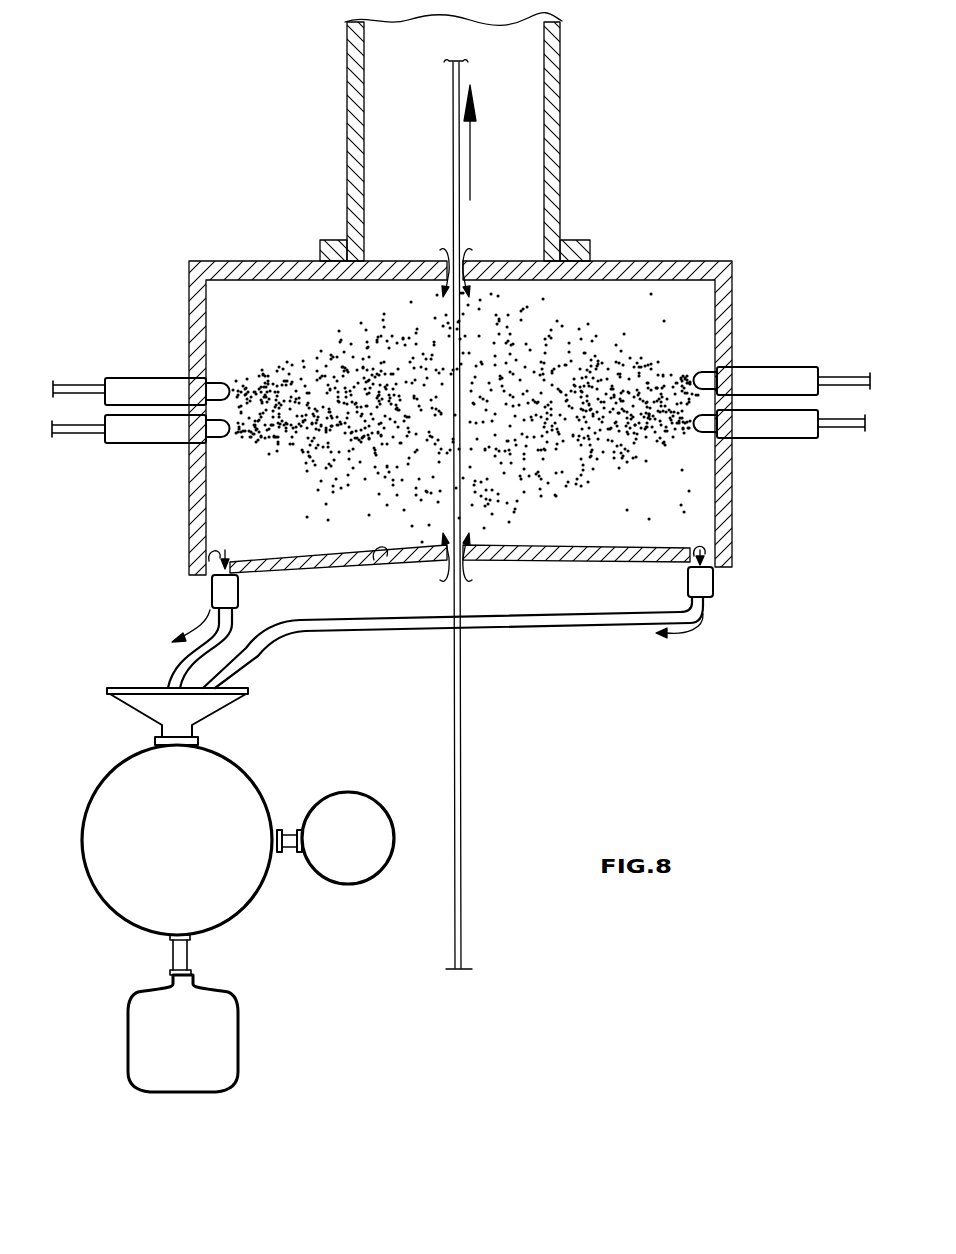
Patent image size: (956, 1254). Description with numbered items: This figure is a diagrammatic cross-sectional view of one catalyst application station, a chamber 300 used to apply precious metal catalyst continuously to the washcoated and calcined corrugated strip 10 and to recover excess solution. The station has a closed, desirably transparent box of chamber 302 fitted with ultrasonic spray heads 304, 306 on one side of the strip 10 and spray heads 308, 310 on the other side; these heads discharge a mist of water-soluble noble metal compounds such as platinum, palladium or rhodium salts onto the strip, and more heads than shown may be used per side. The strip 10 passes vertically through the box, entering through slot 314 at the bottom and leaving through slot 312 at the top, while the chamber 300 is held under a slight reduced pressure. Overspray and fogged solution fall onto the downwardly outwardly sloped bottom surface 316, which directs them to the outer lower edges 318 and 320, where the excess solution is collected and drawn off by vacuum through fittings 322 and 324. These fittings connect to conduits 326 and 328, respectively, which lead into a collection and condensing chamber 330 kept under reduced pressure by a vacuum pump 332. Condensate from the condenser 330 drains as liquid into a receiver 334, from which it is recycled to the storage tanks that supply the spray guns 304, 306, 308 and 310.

The corrugated strip 10 is at (456, 218).
The chamber 300 is at (650, 240).
The closed box of chamber 302 is at (725, 305).
The ultrasonic spray head 304 is at (143, 392).
The ultrasonic spray head 306 is at (137, 432).
The ultrasonic spray head 308 is at (758, 380).
The ultrasonic spray head 310 is at (775, 428).
The slot 312 is at (464, 258).
The slot 314 is at (462, 566).
The sloped bottom surface 316 is at (380, 562).
The outer lower edge 318 is at (212, 553).
The outer lower edge 320 is at (718, 548).
The fitting 322 is at (238, 593).
The fitting 324 is at (700, 588).
The conduit 326 is at (160, 664).
The conduit 328 is at (517, 622).
The collection and condensing chamber 330 is at (214, 788).
The vacuum pump 332 is at (350, 866).
The receiver 334 is at (220, 1058).